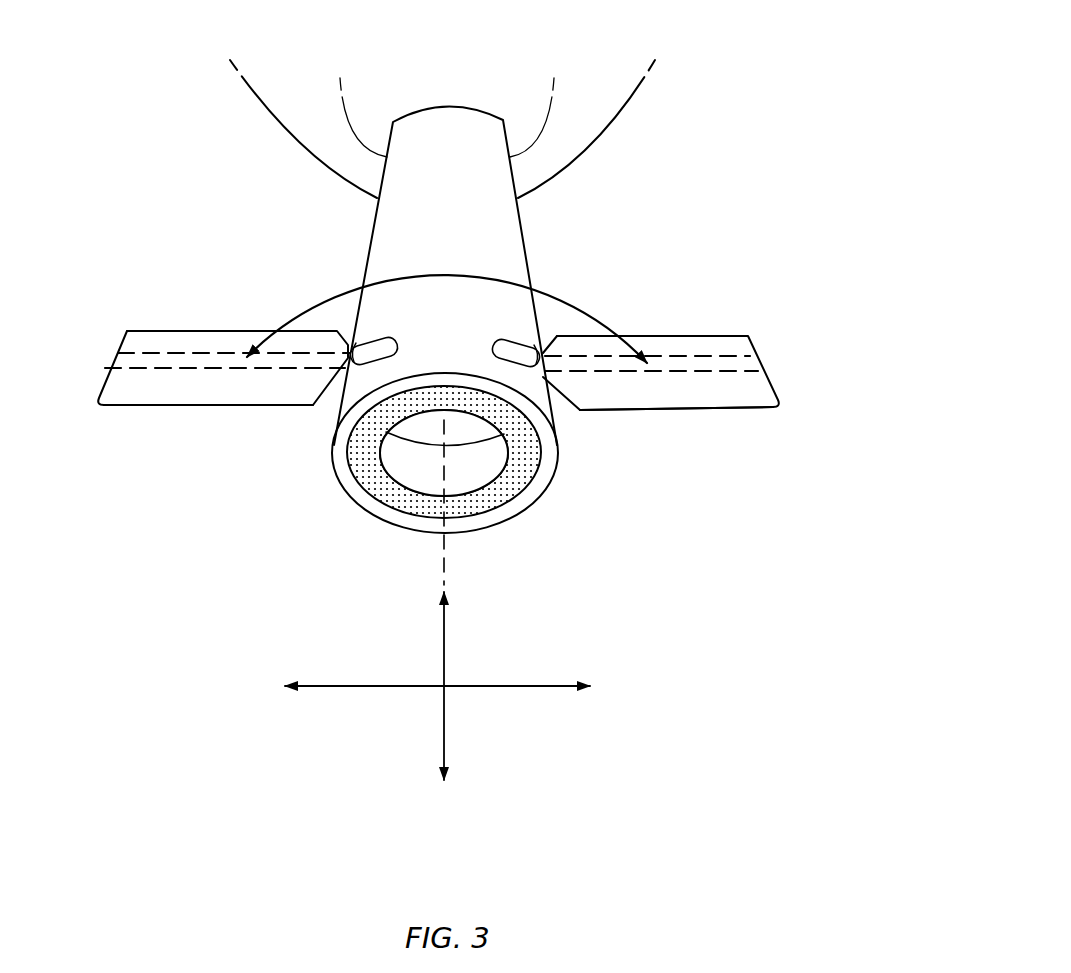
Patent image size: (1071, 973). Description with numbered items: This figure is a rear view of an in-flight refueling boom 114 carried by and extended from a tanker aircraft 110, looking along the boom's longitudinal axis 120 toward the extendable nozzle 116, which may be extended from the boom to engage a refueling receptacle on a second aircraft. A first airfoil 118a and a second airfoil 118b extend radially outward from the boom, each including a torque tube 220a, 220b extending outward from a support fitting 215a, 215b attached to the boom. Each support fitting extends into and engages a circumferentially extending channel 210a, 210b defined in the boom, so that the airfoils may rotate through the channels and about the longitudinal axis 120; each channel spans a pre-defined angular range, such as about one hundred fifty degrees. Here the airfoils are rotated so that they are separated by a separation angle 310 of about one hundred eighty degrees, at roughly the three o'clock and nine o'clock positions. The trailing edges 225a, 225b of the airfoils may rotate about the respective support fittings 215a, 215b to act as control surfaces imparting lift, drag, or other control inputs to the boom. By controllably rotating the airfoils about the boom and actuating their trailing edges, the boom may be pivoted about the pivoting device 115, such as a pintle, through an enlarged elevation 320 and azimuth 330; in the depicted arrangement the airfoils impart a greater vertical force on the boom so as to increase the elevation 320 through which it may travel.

The tanker aircraft 110 is at (317, 118).
The in-flight refueling boom 114 is at (393, 225).
The pivoting device 115 is at (513, 95).
The extendable nozzle 116 is at (502, 492).
The first airfoil 118a is at (208, 390).
The second airfoil 118b is at (715, 390).
The longitudinal axis 120 is at (446, 552).
The channel 210a is at (380, 347).
The channel 210b is at (510, 348).
The support fitting 215a is at (347, 368).
The support fitting 215b is at (532, 373).
The torque tube 220a is at (185, 350).
The torque tube 220b is at (702, 355).
The trailing edge 225a is at (127, 408).
The trailing edge 225b is at (647, 408).
The separation angle 310 is at (480, 270).
The elevation 320 is at (437, 667).
The azimuth 330 is at (350, 695).